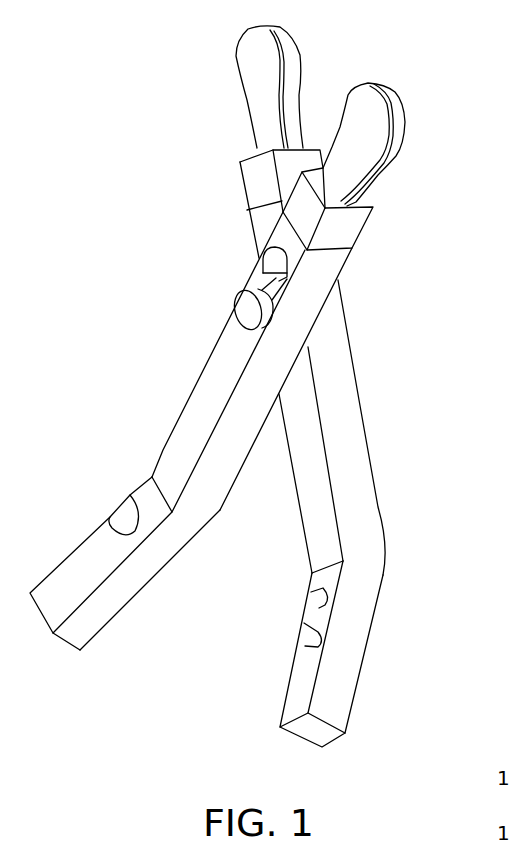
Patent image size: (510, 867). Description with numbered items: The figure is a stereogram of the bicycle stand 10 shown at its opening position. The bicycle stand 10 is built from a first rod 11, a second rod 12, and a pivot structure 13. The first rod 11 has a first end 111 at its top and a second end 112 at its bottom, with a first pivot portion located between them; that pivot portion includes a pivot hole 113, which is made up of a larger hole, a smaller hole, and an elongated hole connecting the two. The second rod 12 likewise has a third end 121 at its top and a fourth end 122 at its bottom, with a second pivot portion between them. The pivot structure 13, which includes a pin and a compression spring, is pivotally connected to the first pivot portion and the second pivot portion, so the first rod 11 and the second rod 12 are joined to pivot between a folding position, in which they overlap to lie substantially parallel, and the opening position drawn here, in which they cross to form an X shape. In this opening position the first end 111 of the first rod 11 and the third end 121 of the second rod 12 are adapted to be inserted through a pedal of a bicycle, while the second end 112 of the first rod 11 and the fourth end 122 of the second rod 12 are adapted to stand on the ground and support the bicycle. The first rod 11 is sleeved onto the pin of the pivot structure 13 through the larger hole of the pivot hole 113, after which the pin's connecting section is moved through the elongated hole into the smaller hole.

The bicycle stand 10 is at (410, 238).
The first rod 11 is at (218, 365).
The first end 111 is at (420, 97).
The second end 112 is at (46, 660).
The pivot hole 113 is at (267, 282).
The second rod 12 is at (340, 415).
The third end 121 is at (222, 52).
The fourth end 122 is at (352, 763).
The pivot structure 13 is at (242, 307).